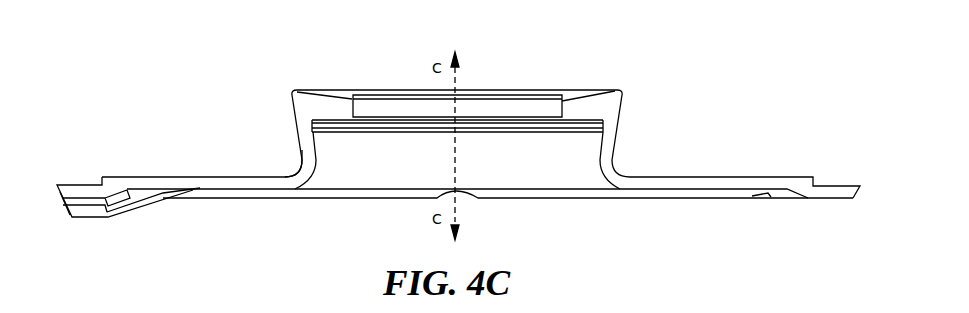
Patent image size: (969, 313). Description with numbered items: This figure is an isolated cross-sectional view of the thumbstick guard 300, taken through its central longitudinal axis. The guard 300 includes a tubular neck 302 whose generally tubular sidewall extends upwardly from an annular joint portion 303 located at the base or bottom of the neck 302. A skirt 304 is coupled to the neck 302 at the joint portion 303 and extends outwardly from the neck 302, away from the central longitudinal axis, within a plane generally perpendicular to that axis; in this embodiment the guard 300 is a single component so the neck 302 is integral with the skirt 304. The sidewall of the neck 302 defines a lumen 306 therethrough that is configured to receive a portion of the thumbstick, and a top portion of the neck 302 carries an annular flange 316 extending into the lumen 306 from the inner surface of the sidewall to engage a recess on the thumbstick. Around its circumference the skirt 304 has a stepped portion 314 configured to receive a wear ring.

The guard 300 is at (129, 69).
The tubular neck 302 is at (618, 145).
The annular joint portion 303 is at (295, 165).
The skirt 304 is at (750, 172).
The lumen 306 is at (493, 86).
The stepped portion 314 is at (91, 189).
The annular flange 316 is at (343, 94).